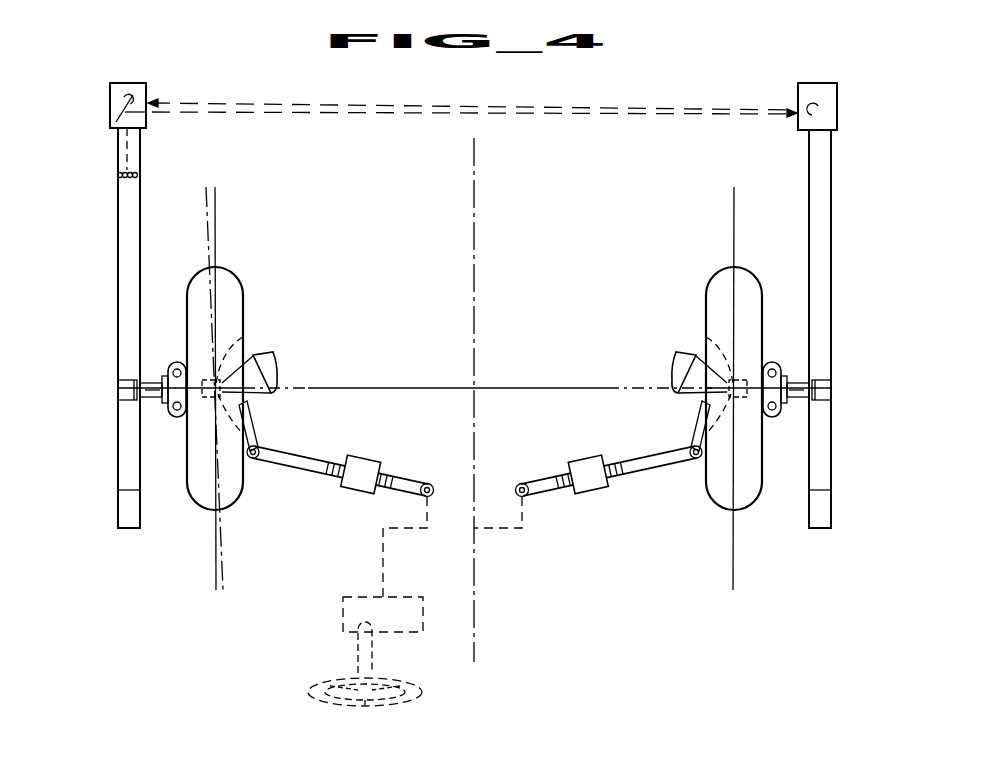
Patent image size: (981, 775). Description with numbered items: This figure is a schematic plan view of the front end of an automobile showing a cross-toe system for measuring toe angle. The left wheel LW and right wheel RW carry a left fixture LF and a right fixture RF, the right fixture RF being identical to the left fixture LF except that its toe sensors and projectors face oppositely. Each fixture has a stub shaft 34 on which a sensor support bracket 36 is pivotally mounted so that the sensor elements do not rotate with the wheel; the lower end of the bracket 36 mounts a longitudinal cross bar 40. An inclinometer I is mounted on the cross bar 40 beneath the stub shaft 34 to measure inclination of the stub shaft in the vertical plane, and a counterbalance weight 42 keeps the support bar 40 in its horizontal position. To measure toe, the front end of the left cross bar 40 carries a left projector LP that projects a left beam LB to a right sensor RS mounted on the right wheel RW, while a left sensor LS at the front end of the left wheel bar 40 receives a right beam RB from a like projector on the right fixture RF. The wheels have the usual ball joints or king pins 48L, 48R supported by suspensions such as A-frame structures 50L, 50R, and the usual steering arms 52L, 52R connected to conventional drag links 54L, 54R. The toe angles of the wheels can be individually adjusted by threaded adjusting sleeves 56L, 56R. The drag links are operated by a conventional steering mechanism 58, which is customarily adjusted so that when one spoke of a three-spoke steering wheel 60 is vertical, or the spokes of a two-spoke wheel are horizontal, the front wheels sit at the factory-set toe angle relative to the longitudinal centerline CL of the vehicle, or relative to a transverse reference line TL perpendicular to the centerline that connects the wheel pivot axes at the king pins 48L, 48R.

The cross bar 40 is at (118, 211).
The left fixture LF is at (112, 302).
The right fixture RF is at (848, 230).
The counterbalance weight 42 is at (125, 506).
The left sensor LS is at (108, 98).
The left projector LP is at (112, 175).
The right sensor RS is at (840, 107).
The right beam RB is at (339, 103).
The left beam LB is at (335, 117).
The longitudinal centerline CL is at (478, 176).
The transverse reference line TL is at (346, 386).
The inclinometer I is at (118, 388).
The stub shaft 34 is at (153, 408).
The sensor support bracket 36 is at (163, 376).
The left wheel LW is at (232, 268).
The right wheel RW is at (707, 272).
The left king pin 48L is at (244, 341).
The right king pin 48R is at (707, 341).
The left A-frame structure 50L is at (278, 356).
The right A-frame structure 50R is at (679, 357).
The left steering arm 52L is at (247, 425).
The right steering arm 52R is at (700, 425).
The left drag link 54L is at (372, 455).
The right drag link 54R is at (596, 455).
The left threaded adjusting sleeve 56L is at (366, 489).
The right threaded adjusting sleeve 56R is at (584, 493).
The steering mechanism 58 is at (378, 582).
The steering wheel 60 is at (352, 670).